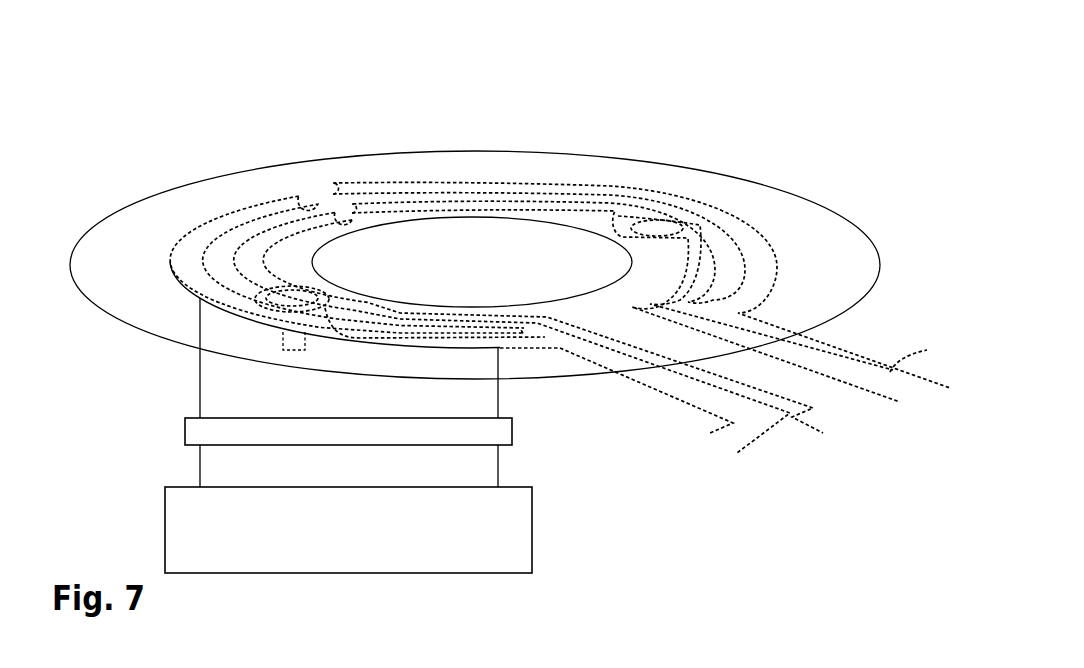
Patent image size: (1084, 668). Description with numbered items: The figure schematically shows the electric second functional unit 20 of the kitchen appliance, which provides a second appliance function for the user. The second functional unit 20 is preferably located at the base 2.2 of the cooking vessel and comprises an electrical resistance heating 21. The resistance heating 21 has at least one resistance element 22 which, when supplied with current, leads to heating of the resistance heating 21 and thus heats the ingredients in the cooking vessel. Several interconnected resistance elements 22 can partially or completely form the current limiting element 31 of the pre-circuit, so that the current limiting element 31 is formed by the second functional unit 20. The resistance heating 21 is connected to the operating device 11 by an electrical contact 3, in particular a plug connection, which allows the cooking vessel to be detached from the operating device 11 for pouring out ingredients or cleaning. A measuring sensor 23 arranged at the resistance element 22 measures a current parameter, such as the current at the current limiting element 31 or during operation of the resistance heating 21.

The second functional unit 20 is at (504, 245).
The base 2.2 is at (669, 178).
The resistance element 22 is at (504, 287).
The resistance heating 21 is at (170, 273).
The current limiting element 31 is at (233, 318).
The measuring sensor 23 is at (297, 350).
The electrical contact 3 is at (493, 433).
The operating device 11 is at (544, 517).